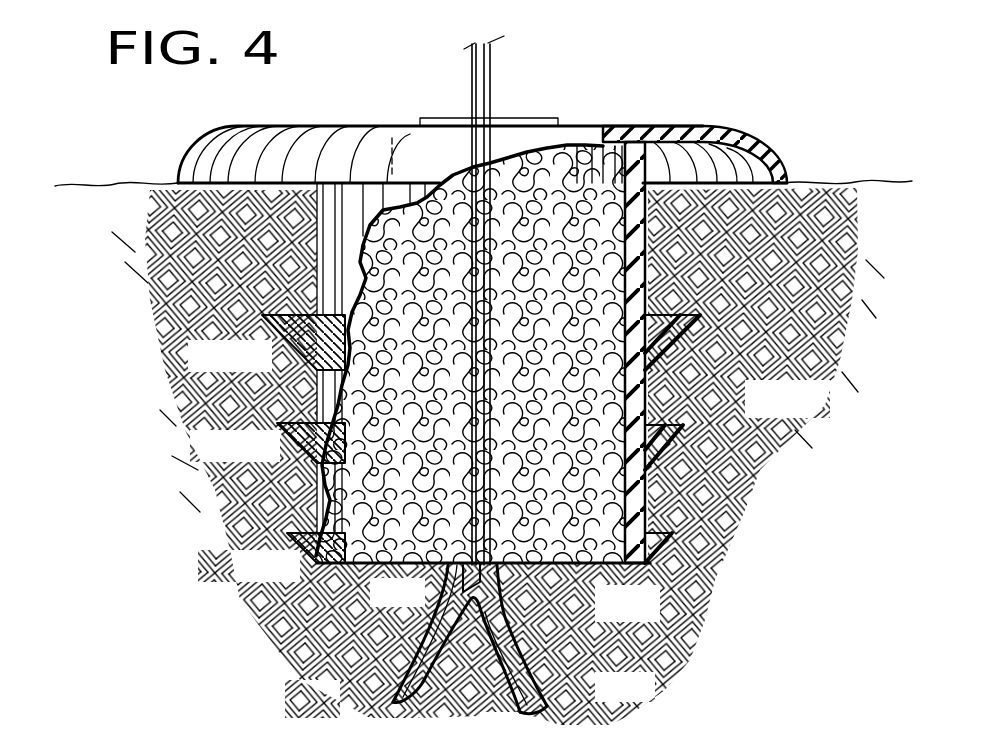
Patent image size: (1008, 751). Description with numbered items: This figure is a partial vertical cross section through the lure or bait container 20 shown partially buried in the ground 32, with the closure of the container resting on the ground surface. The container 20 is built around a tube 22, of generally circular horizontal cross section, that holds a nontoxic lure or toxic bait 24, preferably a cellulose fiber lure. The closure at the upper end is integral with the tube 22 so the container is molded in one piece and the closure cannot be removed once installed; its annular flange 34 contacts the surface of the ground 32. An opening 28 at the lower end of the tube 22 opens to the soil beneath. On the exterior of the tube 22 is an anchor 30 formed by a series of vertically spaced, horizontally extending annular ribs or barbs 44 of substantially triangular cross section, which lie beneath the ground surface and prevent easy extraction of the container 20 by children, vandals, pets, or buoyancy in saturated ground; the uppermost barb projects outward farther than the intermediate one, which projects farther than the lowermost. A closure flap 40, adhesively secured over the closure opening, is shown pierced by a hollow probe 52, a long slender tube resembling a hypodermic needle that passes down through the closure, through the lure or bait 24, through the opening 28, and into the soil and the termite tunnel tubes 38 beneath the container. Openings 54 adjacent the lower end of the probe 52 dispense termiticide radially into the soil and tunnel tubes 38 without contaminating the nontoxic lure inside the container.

The lure or bait container 20 is at (724, 96).
The tube 22 is at (660, 273).
The nontoxic lure or toxic bait 24 is at (581, 464).
The opening at lower end of the tube 28 is at (572, 582).
The anchor 30 is at (770, 395).
The ground 32 is at (138, 216).
The annular flange 34 is at (787, 181).
The insect tunnel tubes 38 is at (368, 683).
The closure flap 40 is at (533, 118).
The annular ribs or barbs 44 is at (268, 352).
The hollow probe 52 is at (470, 354).
The openings 54 is at (445, 578).